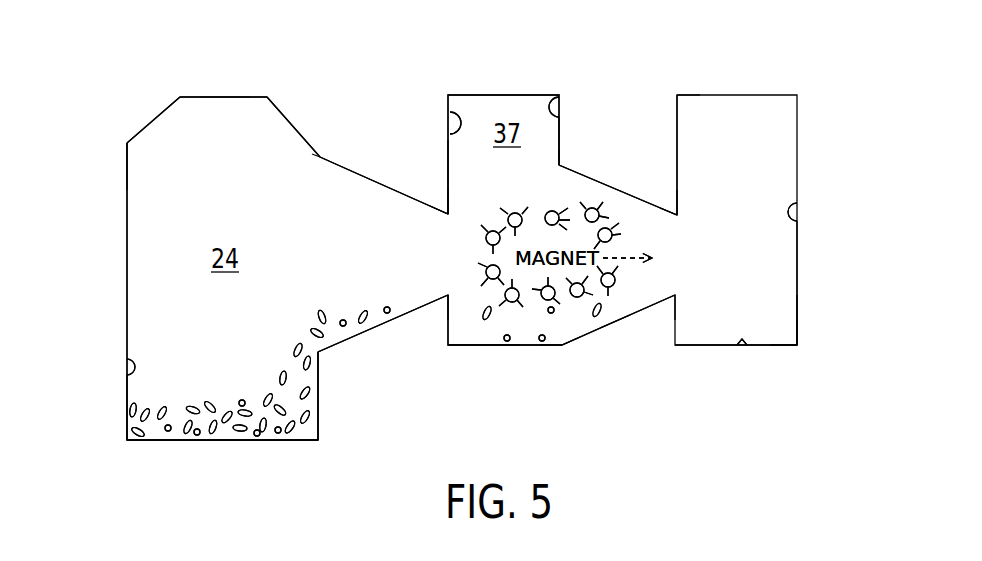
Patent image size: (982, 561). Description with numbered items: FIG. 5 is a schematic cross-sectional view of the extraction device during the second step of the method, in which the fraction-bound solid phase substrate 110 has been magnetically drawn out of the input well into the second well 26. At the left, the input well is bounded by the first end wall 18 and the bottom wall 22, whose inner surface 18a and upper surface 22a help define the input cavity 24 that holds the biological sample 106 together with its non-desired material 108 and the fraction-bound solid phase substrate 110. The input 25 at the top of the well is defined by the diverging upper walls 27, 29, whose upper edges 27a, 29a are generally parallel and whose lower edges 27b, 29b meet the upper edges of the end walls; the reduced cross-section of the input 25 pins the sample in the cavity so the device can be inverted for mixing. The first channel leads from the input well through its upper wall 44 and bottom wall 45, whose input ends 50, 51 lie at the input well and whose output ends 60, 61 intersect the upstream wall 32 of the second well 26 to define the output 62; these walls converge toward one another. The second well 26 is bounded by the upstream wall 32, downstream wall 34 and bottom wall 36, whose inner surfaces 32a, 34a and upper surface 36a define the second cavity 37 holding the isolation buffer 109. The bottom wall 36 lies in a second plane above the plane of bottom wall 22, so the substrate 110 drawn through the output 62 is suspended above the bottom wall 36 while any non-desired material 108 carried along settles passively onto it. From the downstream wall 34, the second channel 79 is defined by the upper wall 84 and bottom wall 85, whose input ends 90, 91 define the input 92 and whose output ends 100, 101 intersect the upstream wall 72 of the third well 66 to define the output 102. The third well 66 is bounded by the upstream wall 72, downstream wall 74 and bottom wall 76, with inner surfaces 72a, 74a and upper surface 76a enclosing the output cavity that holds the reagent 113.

The first end wall 18 is at (125, 403).
The inner surface of first end wall 18a is at (125, 364).
The bottom wall 22 is at (144, 442).
The upper surface of bottom wall 22a is at (167, 442).
The input cavity 24 is at (222, 291).
The input 25 is at (228, 96).
The second well 26 is at (541, 354).
The diverging upper wall 27 is at (158, 118).
The upper edge of upper wall 27a is at (178, 96).
The lower edge of upper wall 27b is at (128, 147).
The diverging upper wall 29 is at (304, 139).
The upper edge of upper wall 29a is at (267, 96).
The lower edge of upper wall 29b is at (318, 156).
The upstream wall 32 is at (447, 189).
The inner surface of upstream wall 32a is at (447, 120).
The downstream wall 34 is at (561, 152).
The inner surface of downstream wall 34a is at (564, 103).
The bottom wall 36 is at (462, 347).
The upper surface of bottom wall 36a is at (492, 347).
The second cavity 37 is at (503, 154).
The upper wall 44 is at (382, 186).
The bottom wall 45 is at (378, 328).
The input end of upper wall 50 is at (327, 154).
The input end of bottom wall 51 is at (324, 360).
The output end of upper wall 60 is at (445, 214).
The output end of bottom wall 61 is at (453, 299).
The output 62 is at (455, 211).
The third well 66 is at (799, 353).
The upstream wall 72 is at (676, 154).
The inner surface of upstream wall 72a is at (681, 122).
The downstream wall 74 is at (799, 258).
The inner surface of downstream wall 74a is at (798, 208).
The bottom wall 76 is at (720, 348).
The upper surface of bottom wall 76a is at (742, 347).
The second channel 79 is at (590, 349).
The upper wall 84 is at (622, 187).
The bottom wall 85 is at (615, 303).
The input end of upper wall 90 is at (557, 169).
The input end of bottom wall 91 is at (559, 341).
The input 92 is at (578, 325).
The output end of upper wall 100 is at (684, 217).
The output end of bottom wall 101 is at (689, 292).
The output 102 is at (681, 213).
The biological sample 106 is at (153, 200).
The non-desired material 108 is at (363, 311).
The isolation buffer 109 is at (620, 306).
The fraction-bound solid phase substrate 110 is at (590, 211).
The reagent 113 is at (765, 302).